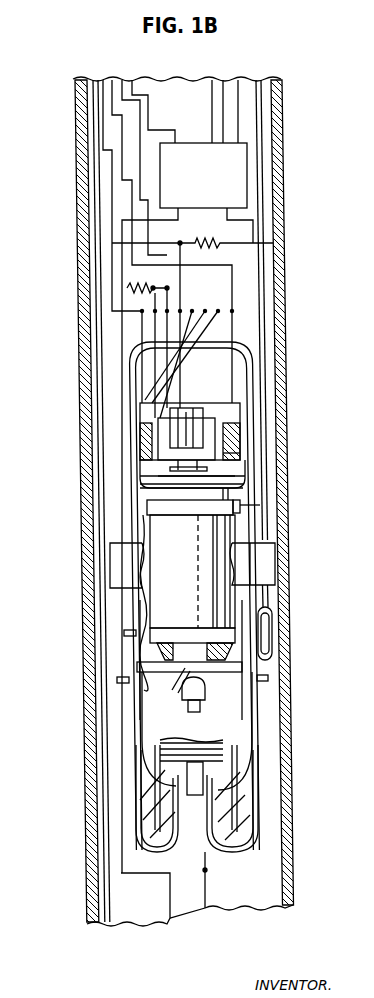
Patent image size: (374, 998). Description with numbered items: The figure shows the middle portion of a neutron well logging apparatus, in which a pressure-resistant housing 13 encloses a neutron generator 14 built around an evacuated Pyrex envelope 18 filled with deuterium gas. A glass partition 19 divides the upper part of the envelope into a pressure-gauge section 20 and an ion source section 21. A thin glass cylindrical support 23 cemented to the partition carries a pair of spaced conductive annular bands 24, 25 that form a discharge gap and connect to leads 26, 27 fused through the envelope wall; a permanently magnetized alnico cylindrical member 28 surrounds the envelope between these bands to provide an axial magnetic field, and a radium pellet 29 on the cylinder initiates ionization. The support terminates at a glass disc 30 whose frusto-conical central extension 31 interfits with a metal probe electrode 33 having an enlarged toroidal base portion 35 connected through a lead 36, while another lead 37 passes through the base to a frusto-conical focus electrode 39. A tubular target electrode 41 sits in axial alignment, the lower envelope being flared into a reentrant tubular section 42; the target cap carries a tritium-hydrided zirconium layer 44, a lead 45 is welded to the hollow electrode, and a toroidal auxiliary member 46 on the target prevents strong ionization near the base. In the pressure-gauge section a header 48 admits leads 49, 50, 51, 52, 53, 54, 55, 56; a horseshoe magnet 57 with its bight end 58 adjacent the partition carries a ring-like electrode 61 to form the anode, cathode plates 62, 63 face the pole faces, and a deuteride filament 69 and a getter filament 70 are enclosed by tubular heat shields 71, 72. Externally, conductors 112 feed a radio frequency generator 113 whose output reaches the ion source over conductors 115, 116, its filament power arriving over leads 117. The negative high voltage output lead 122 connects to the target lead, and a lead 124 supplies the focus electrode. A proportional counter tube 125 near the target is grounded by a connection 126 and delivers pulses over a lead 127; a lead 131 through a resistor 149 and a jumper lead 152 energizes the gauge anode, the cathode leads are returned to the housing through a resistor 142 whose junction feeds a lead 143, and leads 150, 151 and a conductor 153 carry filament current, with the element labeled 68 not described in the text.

The pressure-resistant housing 13 is at (287, 150).
The neutron generator 14 is at (272, 738).
The evacuated envelope 18 is at (250, 705).
The partition 19 is at (122, 476).
The pressure-gauge section 20 is at (187, 468).
The ion source section 21 is at (143, 513).
The cylindrical support 23 is at (150, 530).
The annular band 24 is at (180, 625).
The annular band 25 is at (168, 515).
The lead 26 is at (140, 613).
The lead 27 is at (242, 512).
The cylindrical member of magnetic material 28 is at (115, 565).
The pellet of radioactive material 29 is at (250, 563).
The glass disc 30 is at (272, 621).
The central extension 31 is at (207, 628).
The probe electrode 33 is at (160, 650).
The base portion 35 is at (245, 670).
The lead 36 is at (257, 657).
The lead 37 is at (125, 678).
The focus electrode 39 is at (165, 660).
The target electrode 41 is at (150, 735).
The reentrant tubular section 42 is at (203, 788).
The layer of zirconium 44 is at (180, 708).
The lead 45 is at (208, 866).
The auxiliary member 46 is at (222, 770).
The header 48 is at (212, 340).
The lead 49 is at (128, 322).
The lead 50 is at (135, 330).
The lead 51 is at (128, 360).
The lead 52 is at (128, 364).
The lead 53 is at (193, 310).
The lead 54 is at (222, 327).
The lead 55 is at (205, 350).
The lead 56 is at (233, 308).
The horseshoe type magnet 57 is at (145, 430).
The bight end 58 is at (233, 455).
The ring-like electrode 61 is at (238, 435).
The cathode plate 62 is at (160, 427).
The cathode plate 63 is at (240, 423).
The housing bottom 68 is at (240, 475).
The filament 69 is at (143, 447).
The filament 70 is at (232, 447).
The heat shield 71 is at (140, 410).
The heat shield 72 is at (240, 393).
The conductors 112 is at (242, 88).
The radio frequency generator 113 is at (170, 143).
The conductor 115 is at (127, 288).
The conductor 116 is at (247, 220).
The leads 117 is at (208, 85).
The output lead 122 is at (207, 892).
The lead 124 is at (166, 882).
The proportional counter tube 125 is at (276, 613).
The connection 126 is at (283, 590).
The lead 127 is at (240, 407).
The lead 131 is at (124, 88).
The resistor 142 is at (210, 240).
The lead 143 is at (112, 88).
The resistor 149 is at (125, 298).
The lead 150 is at (93, 80).
The lead 151 is at (146, 88).
The jumper lead 152 is at (167, 290).
The conductor 153 is at (155, 95).